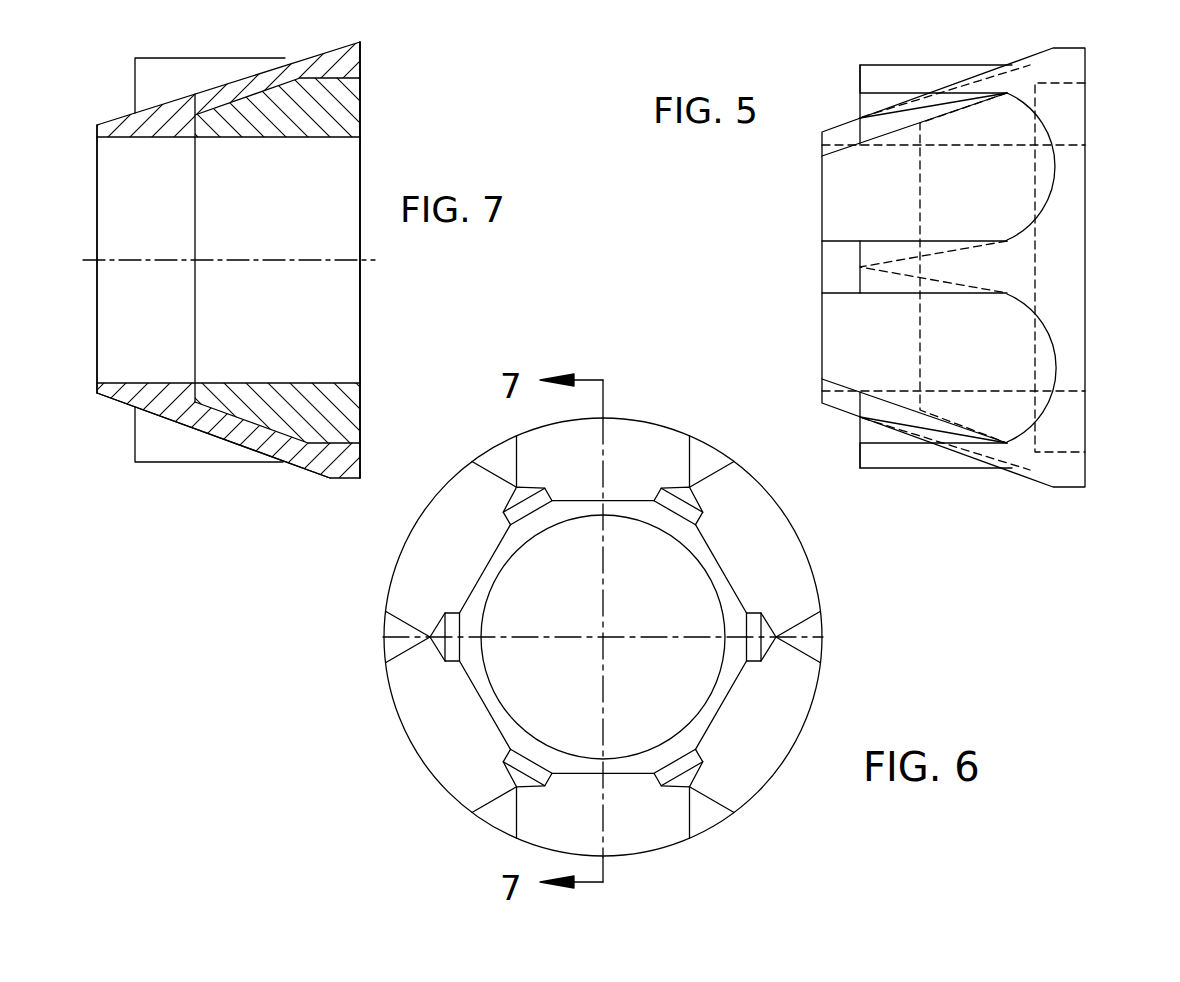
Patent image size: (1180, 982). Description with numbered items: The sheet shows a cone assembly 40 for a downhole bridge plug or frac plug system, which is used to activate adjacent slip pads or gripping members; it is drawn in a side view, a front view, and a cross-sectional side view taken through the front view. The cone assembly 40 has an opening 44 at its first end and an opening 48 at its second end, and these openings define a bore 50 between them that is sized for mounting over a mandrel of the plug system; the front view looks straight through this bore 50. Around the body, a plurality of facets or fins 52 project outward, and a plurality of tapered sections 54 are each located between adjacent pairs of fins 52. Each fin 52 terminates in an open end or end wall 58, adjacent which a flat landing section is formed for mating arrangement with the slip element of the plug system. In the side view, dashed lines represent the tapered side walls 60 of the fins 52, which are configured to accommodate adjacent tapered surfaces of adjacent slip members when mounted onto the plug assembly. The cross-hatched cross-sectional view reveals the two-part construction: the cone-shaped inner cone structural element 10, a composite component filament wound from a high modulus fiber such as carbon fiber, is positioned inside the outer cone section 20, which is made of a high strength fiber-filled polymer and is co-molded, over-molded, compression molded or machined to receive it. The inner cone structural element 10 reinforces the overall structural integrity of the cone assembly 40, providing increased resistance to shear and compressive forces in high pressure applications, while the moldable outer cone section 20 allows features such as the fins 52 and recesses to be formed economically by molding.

In FIG. 7, the inner cone structural element 10 is at (342, 118).
In FIG. 7, the outer cone section 20 is at (352, 65).
In FIG. 7, the cone assembly 40 is at (384, 160).
In FIG. 5, the cone assembly 40 is at (980, 492).
In FIG. 6, the cone assembly 40 is at (328, 695).
In FIG. 7, the opening 44 is at (97, 383).
In FIG. 6, the opening 44 is at (630, 512).
In FIG. 7, the opening 48 is at (365, 410).
In FIG. 7, the bore 50 is at (322, 297).
In FIG. 6, the bore 50 is at (542, 682).
In FIG. 7, the fin 52 is at (163, 445).
In FIG. 5, the fin 52 is at (888, 240).
In FIG. 6, the fin 52 is at (378, 625).
In FIG. 7, the tapered section 54 is at (205, 440).
In FIG. 5, the tapered section 54 is at (1002, 348).
In FIG. 6, the tapered section 54 is at (433, 550).
In FIG. 5, the end wall 58 is at (860, 267).
In FIG. 5, the tapered side wall 60 is at (898, 278).